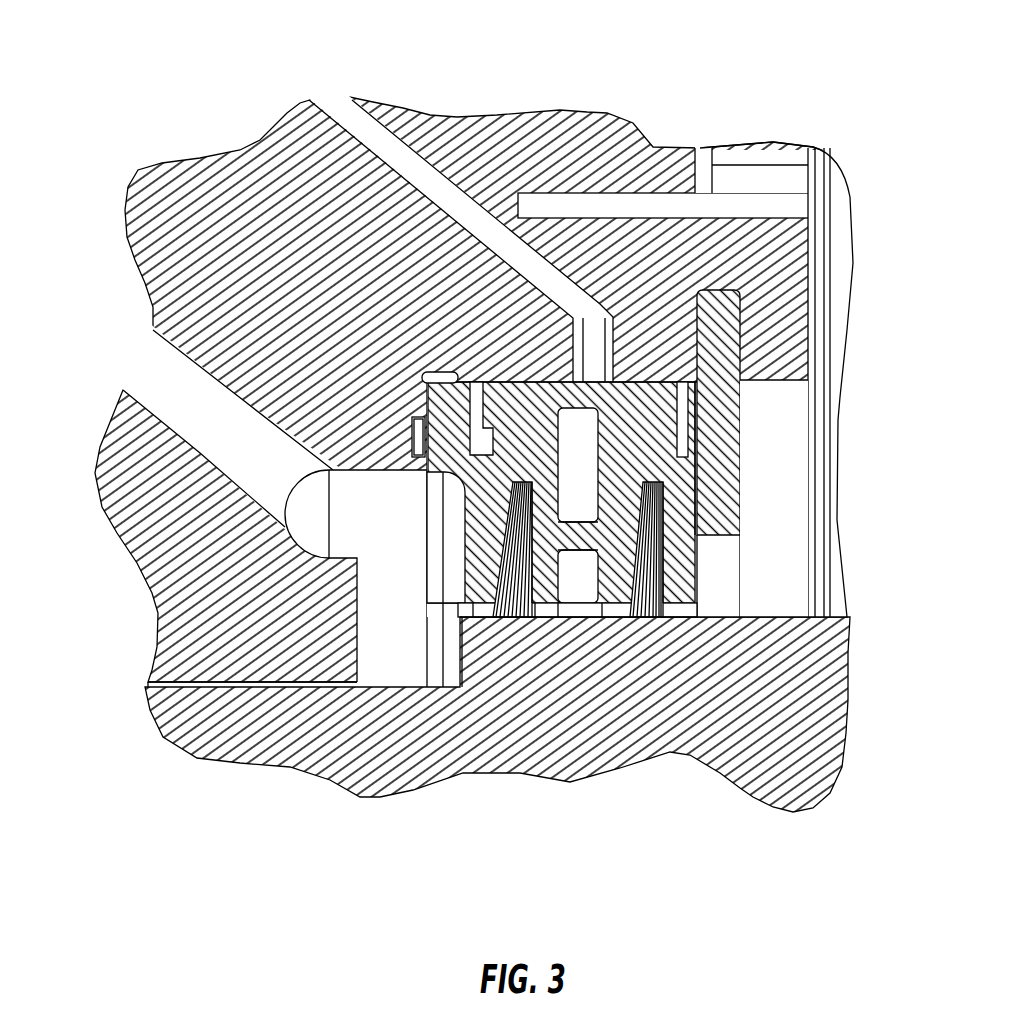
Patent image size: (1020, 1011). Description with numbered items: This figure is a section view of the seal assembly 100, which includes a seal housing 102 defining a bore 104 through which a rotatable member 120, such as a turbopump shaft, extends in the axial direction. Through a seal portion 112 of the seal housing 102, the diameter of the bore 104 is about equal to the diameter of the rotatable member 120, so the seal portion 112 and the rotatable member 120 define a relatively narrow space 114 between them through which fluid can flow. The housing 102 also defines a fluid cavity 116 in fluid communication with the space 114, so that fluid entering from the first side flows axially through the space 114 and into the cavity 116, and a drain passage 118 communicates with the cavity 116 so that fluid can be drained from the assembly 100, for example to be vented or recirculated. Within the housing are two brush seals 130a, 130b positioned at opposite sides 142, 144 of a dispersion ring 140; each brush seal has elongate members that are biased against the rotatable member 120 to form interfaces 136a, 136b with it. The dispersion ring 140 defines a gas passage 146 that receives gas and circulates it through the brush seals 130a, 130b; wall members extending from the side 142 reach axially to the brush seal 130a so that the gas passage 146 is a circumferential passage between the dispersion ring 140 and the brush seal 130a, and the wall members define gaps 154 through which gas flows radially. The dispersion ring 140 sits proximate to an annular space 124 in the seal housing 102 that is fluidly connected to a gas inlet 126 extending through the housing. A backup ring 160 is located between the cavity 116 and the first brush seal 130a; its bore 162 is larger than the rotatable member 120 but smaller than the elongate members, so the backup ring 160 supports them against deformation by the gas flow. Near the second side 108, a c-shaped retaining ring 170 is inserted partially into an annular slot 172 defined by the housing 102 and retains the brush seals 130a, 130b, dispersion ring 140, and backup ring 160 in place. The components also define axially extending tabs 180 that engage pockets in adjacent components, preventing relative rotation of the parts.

The seal assembly 100 is at (411, 82).
The seal housing 102 is at (197, 178).
The bore 104 is at (182, 680).
The second side 108 is at (868, 203).
The seal portion 112 is at (207, 594).
The space 114 is at (130, 684).
The fluid cavity 116 is at (388, 645).
The drain passage 118 is at (133, 353).
The rotatable member 120 is at (795, 805).
The annular space 124 is at (633, 385).
The gas inlet 126 is at (420, 152).
The first brush seal 130a is at (542, 600).
The second brush seal 130b is at (680, 603).
The first interface 136a is at (519, 632).
The second interface 136b is at (650, 632).
The dispersion ring 140 is at (615, 603).
The first side of dispersion ring 142 is at (473, 605).
The second side of dispersion ring 144 is at (690, 453).
The gas passage 146 is at (573, 592).
The gaps 154 is at (690, 497).
The backup ring 160 is at (357, 558).
The bore of backup ring 162 is at (470, 603).
The retaining ring 170 is at (740, 517).
The annular slot 172 is at (723, 290).
The tab 180 is at (428, 380).